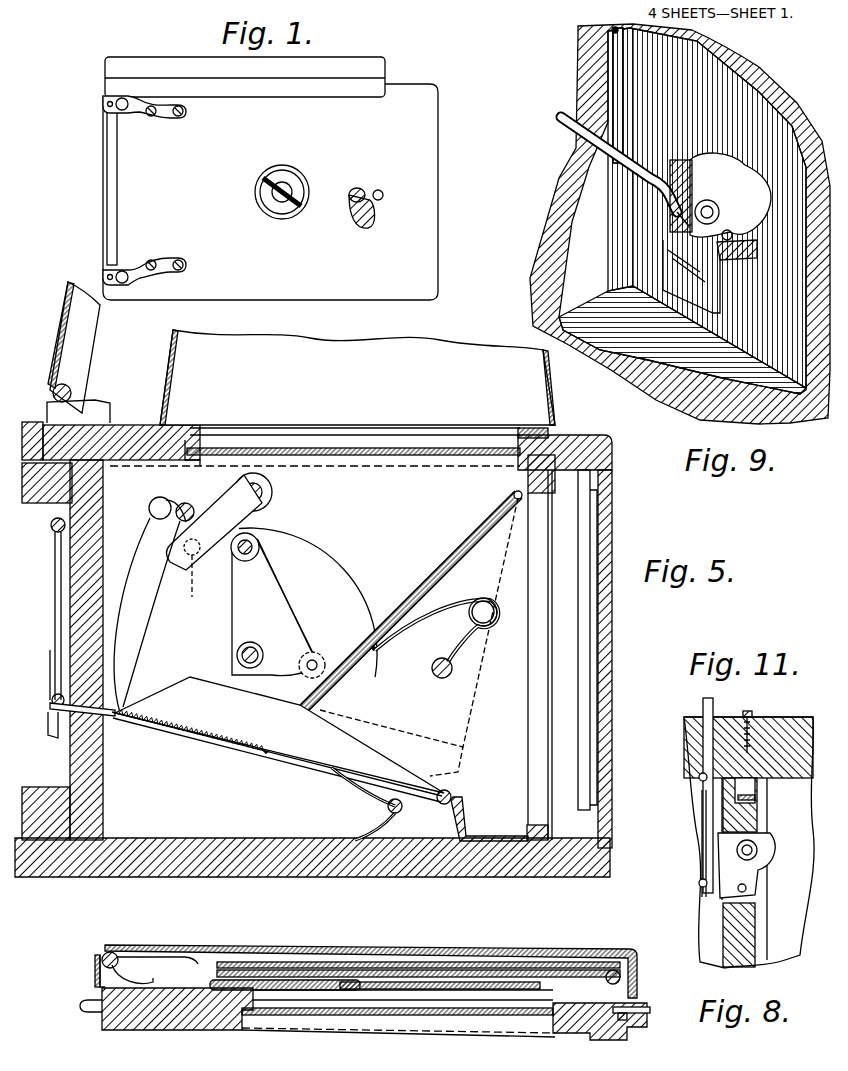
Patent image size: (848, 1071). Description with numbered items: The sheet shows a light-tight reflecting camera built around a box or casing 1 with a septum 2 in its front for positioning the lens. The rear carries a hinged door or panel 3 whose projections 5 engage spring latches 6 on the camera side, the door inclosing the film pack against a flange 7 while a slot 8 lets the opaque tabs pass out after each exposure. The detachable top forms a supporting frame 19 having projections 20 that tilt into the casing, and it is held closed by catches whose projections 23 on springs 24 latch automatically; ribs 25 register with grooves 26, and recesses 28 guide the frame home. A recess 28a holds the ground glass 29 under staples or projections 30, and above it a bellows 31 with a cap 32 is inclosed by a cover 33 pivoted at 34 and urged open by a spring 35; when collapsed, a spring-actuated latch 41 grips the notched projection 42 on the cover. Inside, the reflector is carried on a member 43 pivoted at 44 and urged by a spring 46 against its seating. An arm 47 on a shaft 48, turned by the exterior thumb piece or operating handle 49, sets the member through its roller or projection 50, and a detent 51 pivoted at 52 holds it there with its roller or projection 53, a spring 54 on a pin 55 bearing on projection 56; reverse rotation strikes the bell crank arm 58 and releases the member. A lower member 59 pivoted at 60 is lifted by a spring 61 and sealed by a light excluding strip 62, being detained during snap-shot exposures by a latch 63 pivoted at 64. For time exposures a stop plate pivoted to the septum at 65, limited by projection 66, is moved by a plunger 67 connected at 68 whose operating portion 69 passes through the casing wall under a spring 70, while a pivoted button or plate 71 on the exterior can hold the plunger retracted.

In FIG. 1, the box or casing 1 is at (270, 192).
In FIG. 5, the box or casing 1 is at (330, 858).
In FIG. 11, the box or casing 1 is at (749, 842).
In FIG. 9, the septum 2 is at (680, 224).
In FIG. 5, the septum 2 is at (101, 803).
In FIG. 11, the septum 2 is at (723, 930).
In FIG. 1, the door or panel 3 is at (103, 150).
In FIG. 5, the door or panel 3 is at (612, 490).
In FIG. 1, the projections 5 is at (106, 104).
In FIG. 1, the spring latches 6 is at (165, 118).
In FIG. 5, the flange 7 is at (540, 712).
In FIG. 1, the slot 8 is at (107, 192).
In FIG. 5, the slot 8 is at (598, 600).
In FIG. 5, the supporting frame 19 is at (578, 438).
In FIG. 8, the supporting frame 19 is at (122, 1010).
In FIG. 8, the projections 20 is at (82, 1010).
In FIG. 5, the projections 23 is at (573, 640).
In FIG. 5, the springs 24 is at (562, 655).
In FIG. 5, the ribs 25 is at (366, 466).
In FIG. 8, the grooves 26 is at (305, 1034).
In FIG. 8, the recesses 28 is at (493, 1030).
In FIG. 5, the recess 28a is at (318, 436).
In FIG. 8, the recess 28a is at (400, 1012).
In FIG. 5, the ground glass 29 is at (336, 456).
In FIG. 5, the staples or projections 30 is at (197, 458).
In FIG. 5, the bellows 31 is at (168, 365).
In FIG. 8, the cap 32 is at (300, 962).
In FIG. 5, the cover 33 is at (66, 322).
In FIG. 8, the cover 33 is at (150, 947).
In FIG. 5, the pivot 34 is at (72, 398).
In FIG. 8, the pivot 34 is at (125, 966).
In FIG. 5, the spring 35 is at (68, 350).
In FIG. 8, the spring 35 is at (198, 952).
In FIG. 8, the spring-actuated latch 41 is at (640, 1010).
In FIG. 5, the notched projection 42 is at (405, 620).
In FIG. 8, the notched projection 42 is at (625, 975).
In FIG. 5, the member 43 is at (434, 660).
In FIG. 5, the pivot 44 is at (505, 494).
In FIG. 5, the spring 46 is at (460, 603).
In FIG. 5, the arm 47 is at (262, 560).
In FIG. 5, the shaft 48 is at (237, 656).
In FIG. 1, the thumb piece or operating handle 49 is at (265, 182).
In FIG. 5, the roller or projection 50 is at (258, 538).
In FIG. 5, the detent 51 is at (280, 630).
In FIG. 5, the pivot 52 is at (196, 575).
In FIG. 5, the roller or projection 53 is at (315, 660).
In FIG. 5, the spring 54 is at (150, 520).
In FIG. 5, the pin 55 is at (150, 512).
In FIG. 5, the projection 56 is at (180, 522).
In FIG. 5, the lateral projection or bell crank arm 58 is at (258, 540).
In FIG. 5, the lower member 59 is at (238, 748).
In FIG. 11, the lower member 59 is at (762, 869).
In FIG. 5, the pivot 60 is at (452, 796).
In FIG. 5, the spring 61 is at (350, 778).
In FIG. 5, the light excluding strip 62 is at (212, 730).
In FIG. 5, the latch 63 is at (122, 690).
In FIG. 11, the latch 63 is at (757, 797).
In FIG. 9, the pivot 64 is at (763, 198).
In FIG. 5, the pivot 64 is at (262, 490).
In FIG. 11, the pivot 64 is at (772, 853).
In FIG. 9, the pivot 65 is at (738, 258).
In FIG. 11, the pivot 65 is at (746, 890).
In FIG. 9, the limiting projection 66 is at (712, 205).
In FIG. 11, the limiting projection 66 is at (750, 855).
In FIG. 1, the plunger 67 is at (383, 193).
In FIG. 9, the plunger 67 is at (668, 200).
In FIG. 5, the plunger 67 is at (55, 672).
In FIG. 11, the plunger 67 is at (702, 838).
In FIG. 9, the pivotal connection 68 is at (700, 262).
In FIG. 5, the pivotal connection 68 is at (58, 732).
In FIG. 11, the pivotal connection 68 is at (700, 885).
In FIG. 9, the operating portion 69 is at (558, 122).
In FIG. 11, the operating portion 69 is at (703, 699).
In FIG. 9, the spring 70 is at (613, 68).
In FIG. 5, the spring 70 is at (55, 560).
In FIG. 11, the spring 70 is at (700, 778).
In FIG. 1, the pivoted button or plate 71 is at (364, 216).
In FIG. 11, the pivoted button or plate 71 is at (760, 714).